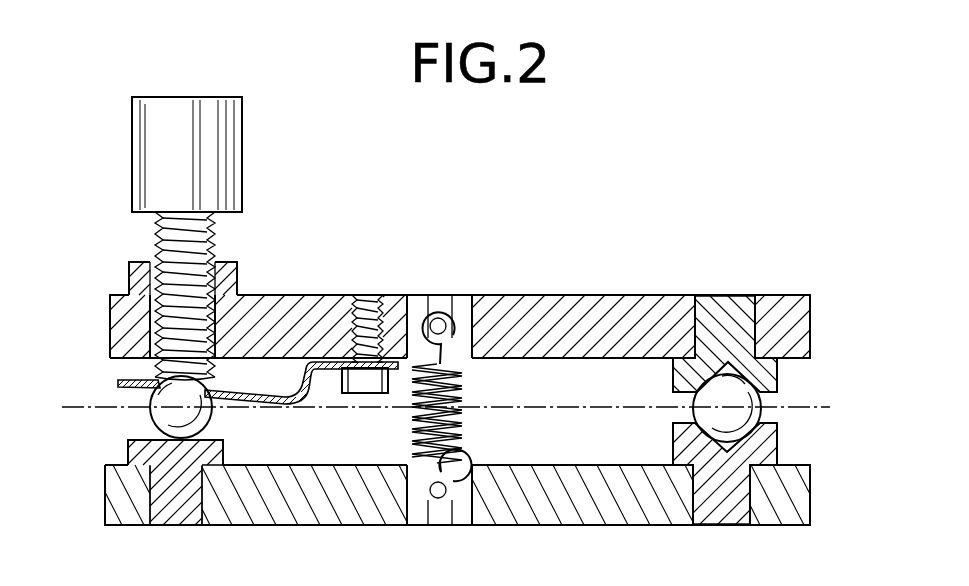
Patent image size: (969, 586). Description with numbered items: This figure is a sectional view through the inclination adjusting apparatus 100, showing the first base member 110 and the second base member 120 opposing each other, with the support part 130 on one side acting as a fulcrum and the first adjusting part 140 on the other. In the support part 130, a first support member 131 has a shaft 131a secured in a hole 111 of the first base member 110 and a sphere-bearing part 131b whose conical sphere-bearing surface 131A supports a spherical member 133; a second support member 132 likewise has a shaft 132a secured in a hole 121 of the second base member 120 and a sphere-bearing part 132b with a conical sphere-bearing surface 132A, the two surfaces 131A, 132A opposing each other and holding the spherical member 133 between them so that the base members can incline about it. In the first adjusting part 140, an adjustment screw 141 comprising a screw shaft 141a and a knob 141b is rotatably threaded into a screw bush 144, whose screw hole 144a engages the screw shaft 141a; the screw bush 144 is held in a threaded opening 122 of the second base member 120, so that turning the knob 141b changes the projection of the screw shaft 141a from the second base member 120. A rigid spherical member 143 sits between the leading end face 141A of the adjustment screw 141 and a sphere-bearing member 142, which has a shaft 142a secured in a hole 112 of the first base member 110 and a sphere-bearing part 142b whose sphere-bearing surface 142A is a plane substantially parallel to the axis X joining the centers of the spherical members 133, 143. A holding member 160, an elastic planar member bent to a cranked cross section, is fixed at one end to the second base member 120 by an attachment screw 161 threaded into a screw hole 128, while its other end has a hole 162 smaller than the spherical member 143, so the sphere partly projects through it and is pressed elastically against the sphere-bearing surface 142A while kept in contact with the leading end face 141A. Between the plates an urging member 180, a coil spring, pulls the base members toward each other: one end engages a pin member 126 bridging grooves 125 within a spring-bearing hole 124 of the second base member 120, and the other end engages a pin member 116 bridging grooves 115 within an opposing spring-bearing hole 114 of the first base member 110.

The inclination adjusting apparatus 100 is at (522, 216).
The first base member 110 is at (591, 527).
The hole 111 is at (702, 525).
The hole 112 is at (196, 515).
The spring-bearing hole 114 is at (462, 520).
The groove 115 is at (437, 528).
The pin member 116 is at (422, 510).
The second base member 120 is at (552, 292).
The hole 121 is at (702, 298).
The threaded hole 122 is at (236, 278).
The spring-bearing hole 124 is at (473, 296).
The groove 125 is at (437, 293).
The pin member 126 is at (443, 294).
The screw hole 128 is at (372, 296).
The support part 130 is at (803, 381).
The first support member 131 is at (728, 525).
The shaft 131a is at (738, 510).
The sphere-bearing part 131b is at (680, 430).
The sphere-bearing surface 131A is at (762, 436).
The second support member 132 is at (726, 293).
The shaft 132a is at (738, 310).
The sphere-bearing part 132b is at (680, 370).
The sphere-bearing surface 132A is at (768, 400).
The spherical member 133 is at (694, 404).
The first adjusting part 140 is at (98, 345).
The adjustment screw 141 is at (112, 176).
The screw shaft 141a is at (153, 232).
The knob 141b is at (236, 130).
The leading end face 141A is at (205, 376).
The sphere-bearing member 142 is at (178, 532).
The shaft 142a is at (160, 500).
The sphere-bearing part 142b is at (216, 454).
The sphere-bearing surface 142A is at (212, 430).
The spherical member 143 is at (158, 422).
The screw bush 144 is at (128, 264).
The screw hole 144a is at (212, 262).
The holding member 160 is at (118, 373).
The attachment screw 161 is at (368, 394).
The hole 162 is at (158, 392).
The urging member 180 is at (463, 430).
The axis X is at (88, 417).